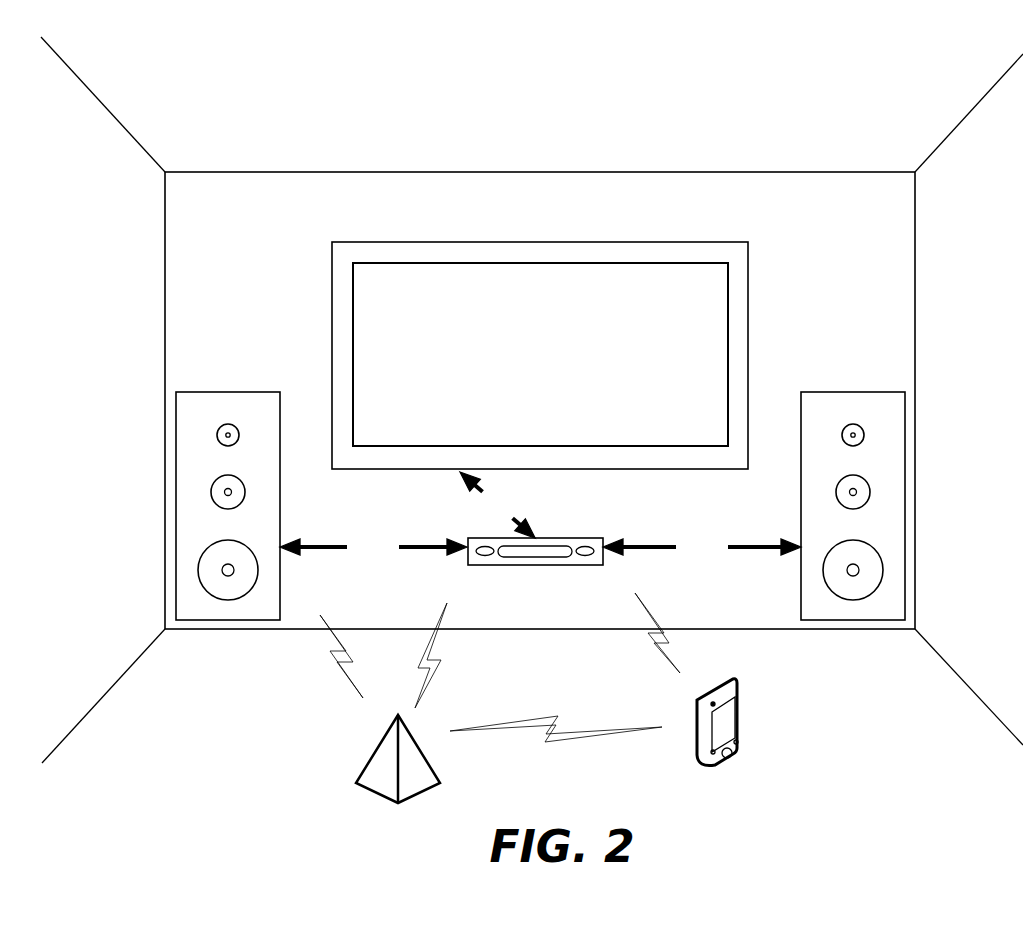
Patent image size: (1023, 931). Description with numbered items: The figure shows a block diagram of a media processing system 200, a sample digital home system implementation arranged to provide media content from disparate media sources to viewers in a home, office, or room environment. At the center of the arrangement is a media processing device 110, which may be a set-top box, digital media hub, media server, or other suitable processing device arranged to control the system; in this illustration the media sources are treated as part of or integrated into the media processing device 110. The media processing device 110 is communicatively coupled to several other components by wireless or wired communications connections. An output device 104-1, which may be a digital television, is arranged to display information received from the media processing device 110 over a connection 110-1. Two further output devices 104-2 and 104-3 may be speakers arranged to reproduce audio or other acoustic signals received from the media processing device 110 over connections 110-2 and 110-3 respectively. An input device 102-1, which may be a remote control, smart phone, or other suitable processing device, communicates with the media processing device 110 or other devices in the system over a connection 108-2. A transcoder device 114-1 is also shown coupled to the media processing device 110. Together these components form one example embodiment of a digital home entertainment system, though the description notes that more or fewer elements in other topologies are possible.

The media processing system 200 is at (517, 90).
The output device 104-1 is at (383, 282).
The output device 104-2 is at (893, 537).
The output device 104-3 is at (186, 523).
The media processing device 110 is at (529, 575).
The communications connection 110-1 is at (497, 504).
The communications connection 110-2 is at (373, 547).
The communications connection 110-3 is at (702, 547).
The transcoder device 114-1 is at (380, 798).
The communications connection 108-2 is at (672, 633).
The input device 102-1 is at (748, 718).